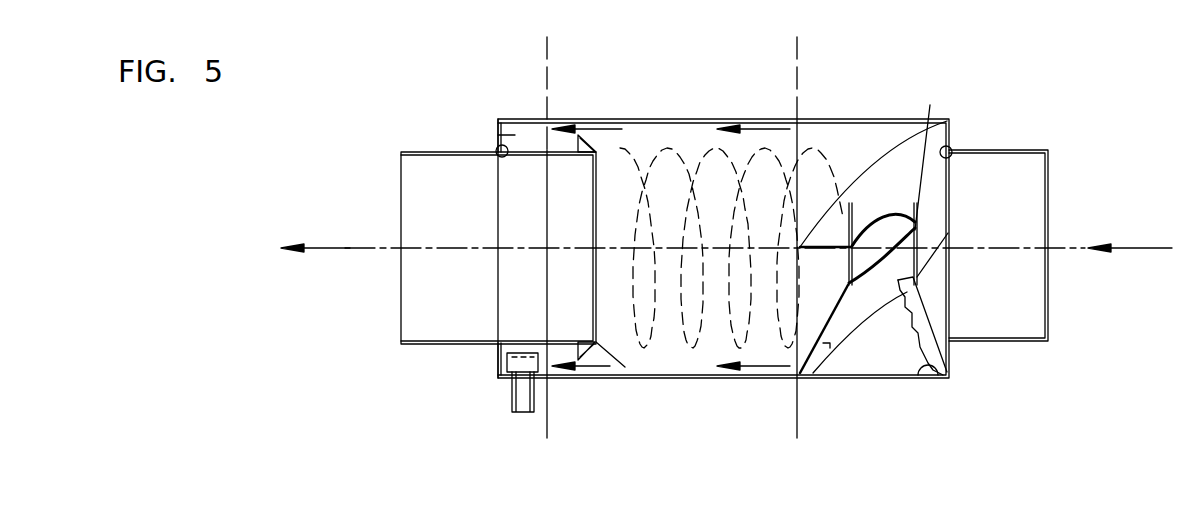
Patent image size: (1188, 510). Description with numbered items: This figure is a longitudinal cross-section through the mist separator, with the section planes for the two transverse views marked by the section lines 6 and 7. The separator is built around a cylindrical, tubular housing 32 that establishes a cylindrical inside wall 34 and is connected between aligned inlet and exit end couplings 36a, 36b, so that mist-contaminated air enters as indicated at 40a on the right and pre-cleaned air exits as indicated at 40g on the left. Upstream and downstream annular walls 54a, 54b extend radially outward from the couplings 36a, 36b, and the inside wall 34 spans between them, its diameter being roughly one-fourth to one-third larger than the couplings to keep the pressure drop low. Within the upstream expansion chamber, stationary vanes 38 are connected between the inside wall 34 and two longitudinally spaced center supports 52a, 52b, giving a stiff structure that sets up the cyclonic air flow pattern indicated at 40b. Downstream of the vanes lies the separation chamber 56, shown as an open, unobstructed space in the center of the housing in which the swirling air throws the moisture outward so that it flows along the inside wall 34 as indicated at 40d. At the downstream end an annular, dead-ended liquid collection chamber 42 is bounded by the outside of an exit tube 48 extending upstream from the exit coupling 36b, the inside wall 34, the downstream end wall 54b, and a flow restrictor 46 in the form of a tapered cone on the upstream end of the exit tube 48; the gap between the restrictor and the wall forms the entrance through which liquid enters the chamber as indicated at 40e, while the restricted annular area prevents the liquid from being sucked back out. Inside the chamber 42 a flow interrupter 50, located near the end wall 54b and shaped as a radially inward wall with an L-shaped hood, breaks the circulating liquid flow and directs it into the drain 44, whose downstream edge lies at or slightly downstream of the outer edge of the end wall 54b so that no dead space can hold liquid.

The section line 6- 6 is at (797, 37).
The section line 7- 7 is at (547, 37).
The housing 32 is at (668, 119).
The inside wall 34 is at (945, 378).
The inlet end coupling 36a is at (1046, 150).
The exit end coupling 36b is at (408, 151).
The stationary vanes 38 is at (892, 150).
The entering mist-contaminated air flow 40a is at (1140, 247).
The cyclonic air flow pattern 40b is at (828, 343).
The liquid flow along inside wall 40d is at (613, 129).
The liquid flow into collection chamber 40e is at (553, 129).
The exiting pre-cleaned air flow 40g is at (327, 247).
The liquid collection chamber 42 is at (500, 135).
The drain 44 is at (510, 405).
The flow restrictor 46 is at (627, 366).
The exit tube 48 is at (558, 345).
The flow interrupter 50 is at (507, 366).
The upstream center support 52a is at (930, 105).
The downstream center support 52b is at (851, 195).
The upstream annular wall 54a is at (952, 147).
The downstream end wall 54b is at (497, 150).
The separation chamber 56 is at (700, 362).